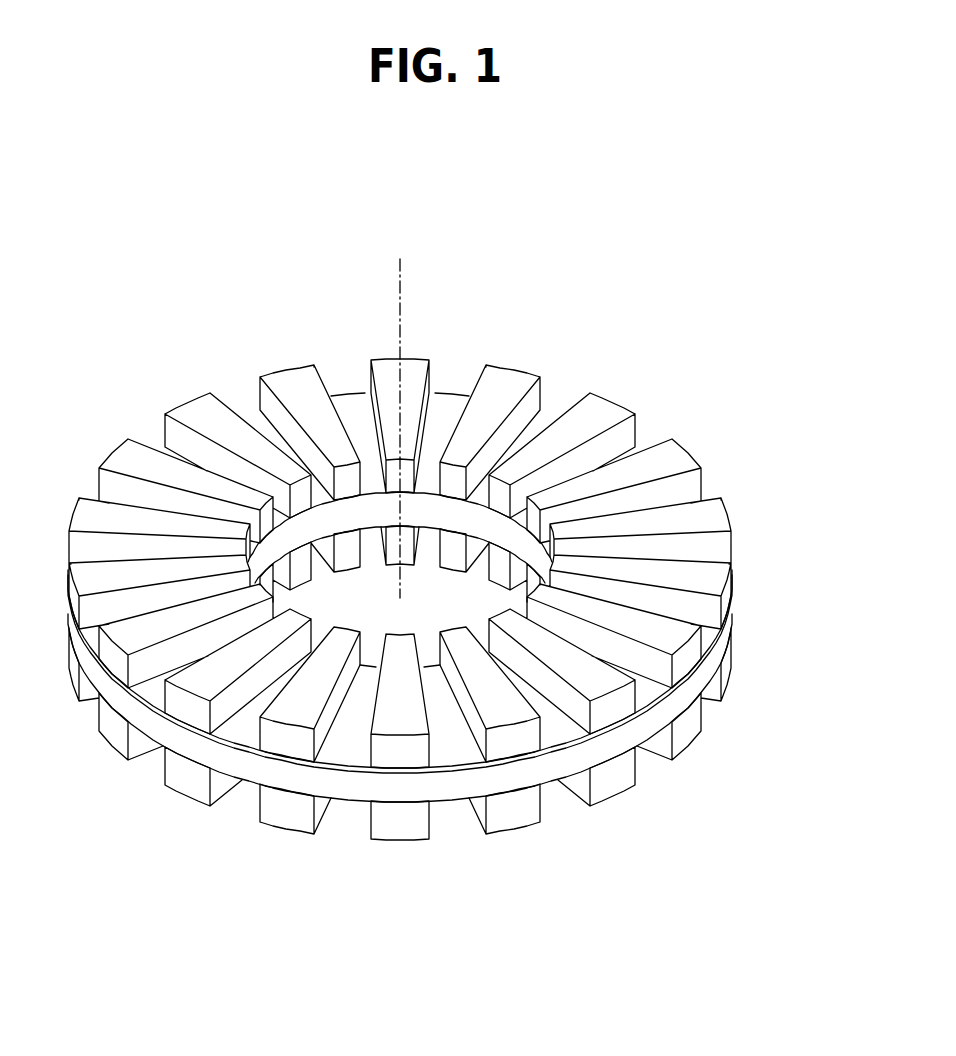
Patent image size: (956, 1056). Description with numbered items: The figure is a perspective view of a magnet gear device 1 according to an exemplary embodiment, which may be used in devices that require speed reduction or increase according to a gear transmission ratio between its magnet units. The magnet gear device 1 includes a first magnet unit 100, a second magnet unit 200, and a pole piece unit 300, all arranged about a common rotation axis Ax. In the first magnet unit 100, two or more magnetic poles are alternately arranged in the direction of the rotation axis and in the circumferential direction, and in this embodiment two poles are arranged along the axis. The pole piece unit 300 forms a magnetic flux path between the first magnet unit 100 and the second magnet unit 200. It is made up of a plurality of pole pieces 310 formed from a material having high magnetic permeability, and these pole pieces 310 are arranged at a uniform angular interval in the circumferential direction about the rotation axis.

The magnet gear device 1 is at (532, 198).
The first magnet unit 100 is at (357, 722).
The second magnet unit 200 is at (445, 806).
The pole piece unit 300 is at (622, 388).
The pole pieces 310 is at (696, 727).